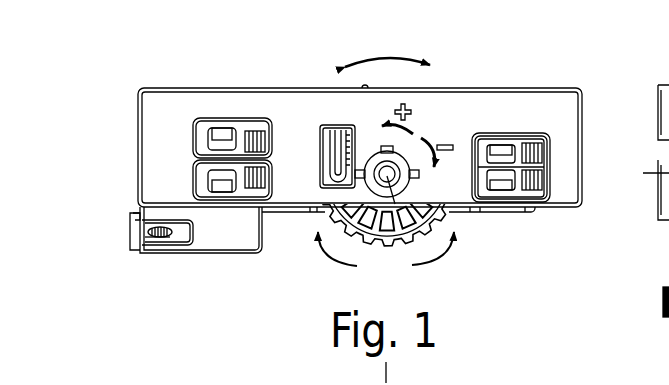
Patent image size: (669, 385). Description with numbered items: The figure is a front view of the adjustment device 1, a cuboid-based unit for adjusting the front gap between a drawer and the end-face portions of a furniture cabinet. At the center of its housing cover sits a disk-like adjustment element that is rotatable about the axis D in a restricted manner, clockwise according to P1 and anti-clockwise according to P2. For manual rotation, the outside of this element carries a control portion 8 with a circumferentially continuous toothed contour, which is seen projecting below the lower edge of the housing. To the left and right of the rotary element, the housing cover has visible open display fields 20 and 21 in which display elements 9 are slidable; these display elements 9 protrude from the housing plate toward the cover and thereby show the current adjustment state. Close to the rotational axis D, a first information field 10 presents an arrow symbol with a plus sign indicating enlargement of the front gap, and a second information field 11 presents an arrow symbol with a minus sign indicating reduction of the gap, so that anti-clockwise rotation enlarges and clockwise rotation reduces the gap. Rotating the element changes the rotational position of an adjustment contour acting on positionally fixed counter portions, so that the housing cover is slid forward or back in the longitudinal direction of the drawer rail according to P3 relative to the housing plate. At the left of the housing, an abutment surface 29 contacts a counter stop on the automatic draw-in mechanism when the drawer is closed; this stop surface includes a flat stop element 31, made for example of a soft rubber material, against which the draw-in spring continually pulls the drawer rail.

The adjustment device 1 is at (592, 87).
The control portion 8 is at (382, 247).
The display elements 9 is at (220, 132).
The first information field 10 is at (424, 106).
The second information field 11 is at (451, 130).
The display field 20 is at (247, 116).
The display field 21 is at (552, 196).
The abutment surface 29 is at (126, 231).
The flat stop element 31 is at (133, 214).
The axis D is at (378, 244).
The clockwise rotation direction P1 is at (325, 252).
The anti-clockwise rotation direction P2 is at (446, 253).
The sliding direction P3 is at (386, 58).